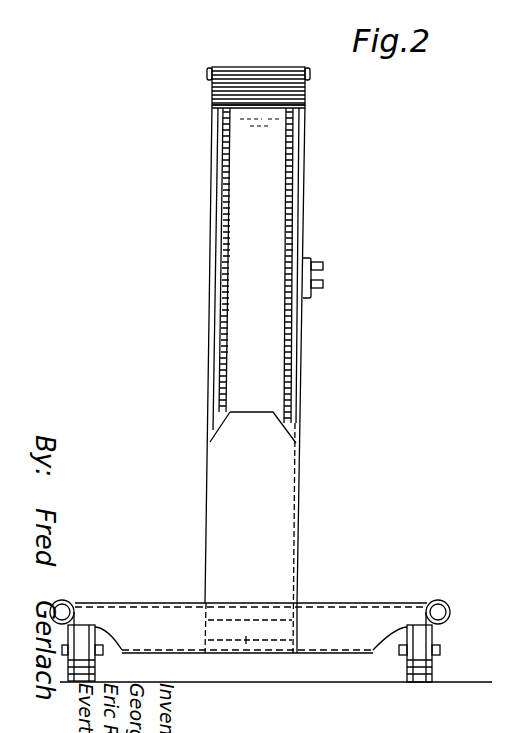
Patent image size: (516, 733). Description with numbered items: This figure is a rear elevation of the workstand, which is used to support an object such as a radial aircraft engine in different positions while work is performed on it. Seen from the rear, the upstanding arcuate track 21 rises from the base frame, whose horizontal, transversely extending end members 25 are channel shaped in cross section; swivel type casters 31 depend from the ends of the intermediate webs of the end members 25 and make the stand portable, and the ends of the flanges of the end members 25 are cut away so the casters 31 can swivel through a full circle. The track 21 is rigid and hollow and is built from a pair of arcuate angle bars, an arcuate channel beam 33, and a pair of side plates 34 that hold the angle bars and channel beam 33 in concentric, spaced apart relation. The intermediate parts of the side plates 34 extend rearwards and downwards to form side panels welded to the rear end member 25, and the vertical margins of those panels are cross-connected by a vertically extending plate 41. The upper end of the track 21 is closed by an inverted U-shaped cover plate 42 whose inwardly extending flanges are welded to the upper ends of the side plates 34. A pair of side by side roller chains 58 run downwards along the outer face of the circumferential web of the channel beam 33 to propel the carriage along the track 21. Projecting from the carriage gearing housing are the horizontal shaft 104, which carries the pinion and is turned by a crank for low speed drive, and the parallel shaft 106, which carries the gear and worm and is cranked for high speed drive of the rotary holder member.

The cover plate 42 is at (305, 86).
The side plates 34 is at (305, 187).
The arcuate channel beam 33 is at (285, 218).
The roller chains 58 is at (288, 240).
The shaft 104 is at (323, 266).
The shaft 106 is at (323, 286).
The arcuate track 21 is at (276, 379).
The vertically extending plate 41 is at (283, 537).
The end members 25 is at (345, 603).
The swivel type casters 31 is at (95, 668).